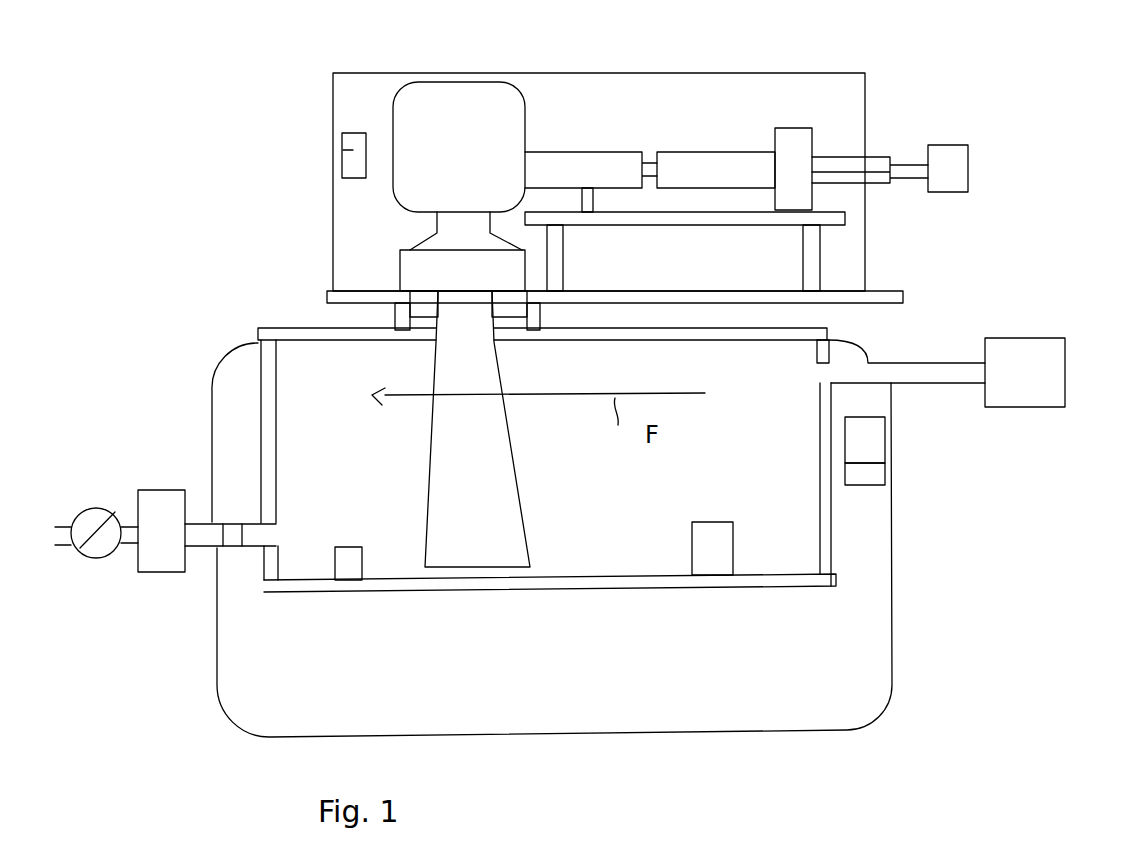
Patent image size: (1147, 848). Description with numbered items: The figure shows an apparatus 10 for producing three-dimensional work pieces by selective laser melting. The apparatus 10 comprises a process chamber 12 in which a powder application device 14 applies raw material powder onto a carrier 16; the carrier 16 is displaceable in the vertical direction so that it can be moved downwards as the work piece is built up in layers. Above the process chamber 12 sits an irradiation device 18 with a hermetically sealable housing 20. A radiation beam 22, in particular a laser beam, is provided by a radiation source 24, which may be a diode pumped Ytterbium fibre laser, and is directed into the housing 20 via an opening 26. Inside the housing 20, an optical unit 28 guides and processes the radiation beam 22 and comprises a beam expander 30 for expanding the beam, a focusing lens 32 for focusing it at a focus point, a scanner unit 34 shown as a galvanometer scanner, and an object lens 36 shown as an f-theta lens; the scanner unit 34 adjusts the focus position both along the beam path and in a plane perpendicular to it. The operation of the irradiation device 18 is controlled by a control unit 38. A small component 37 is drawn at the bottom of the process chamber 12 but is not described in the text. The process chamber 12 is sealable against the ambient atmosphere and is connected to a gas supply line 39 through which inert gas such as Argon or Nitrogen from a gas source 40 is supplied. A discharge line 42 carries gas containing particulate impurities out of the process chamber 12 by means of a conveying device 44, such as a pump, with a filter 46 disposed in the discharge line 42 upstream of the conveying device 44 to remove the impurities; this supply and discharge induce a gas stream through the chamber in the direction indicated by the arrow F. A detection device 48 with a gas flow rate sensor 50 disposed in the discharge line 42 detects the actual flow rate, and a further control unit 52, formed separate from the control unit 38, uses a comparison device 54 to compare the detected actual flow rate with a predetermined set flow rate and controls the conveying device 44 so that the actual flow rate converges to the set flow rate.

The apparatus 10 is at (984, 239).
The process chamber 12 is at (778, 560).
The powder application device 14 is at (712, 540).
The carrier 16 is at (562, 590).
The irradiation device 18 is at (948, 99).
The housing 20 is at (828, 73).
The radiation beam 22 is at (512, 440).
The radiation source 24 is at (960, 162).
The opening 26 is at (867, 157).
The optical unit 28 is at (698, 114).
The beam expander 30 is at (722, 160).
The focusing lens 32 is at (600, 154).
The scanner unit 34 is at (483, 93).
The object lens 36 is at (405, 265).
The sensor 37 is at (348, 565).
The control unit 38 is at (340, 150).
The gas supply line 39 is at (912, 370).
The gas source 40 is at (1050, 352).
The discharge line 42 is at (255, 548).
The conveying device 44 is at (88, 505).
The filter 46 is at (155, 500).
The detection device 48 is at (237, 422).
The gas flow rate sensor 50 is at (233, 522).
The further control unit 52 is at (877, 445).
The comparison device 54 is at (877, 475).